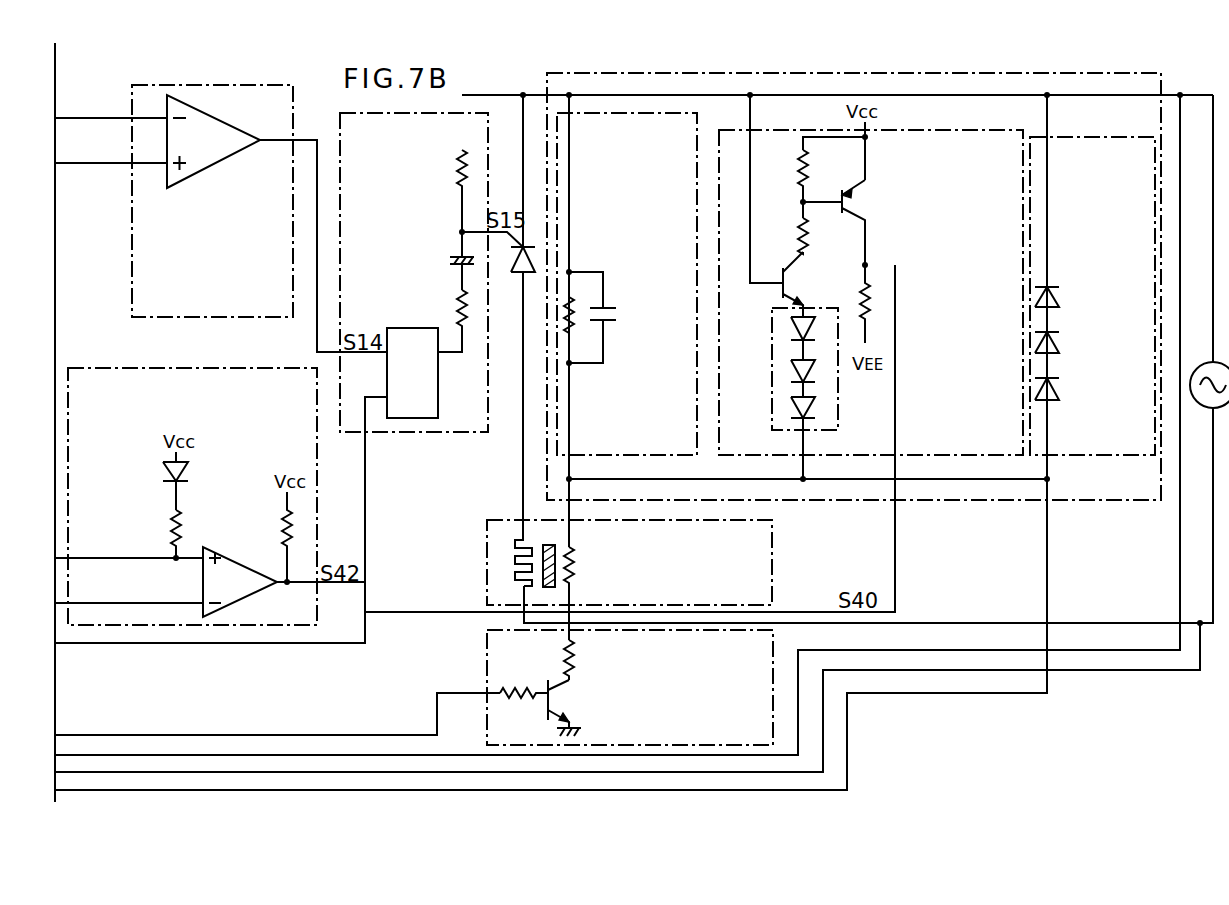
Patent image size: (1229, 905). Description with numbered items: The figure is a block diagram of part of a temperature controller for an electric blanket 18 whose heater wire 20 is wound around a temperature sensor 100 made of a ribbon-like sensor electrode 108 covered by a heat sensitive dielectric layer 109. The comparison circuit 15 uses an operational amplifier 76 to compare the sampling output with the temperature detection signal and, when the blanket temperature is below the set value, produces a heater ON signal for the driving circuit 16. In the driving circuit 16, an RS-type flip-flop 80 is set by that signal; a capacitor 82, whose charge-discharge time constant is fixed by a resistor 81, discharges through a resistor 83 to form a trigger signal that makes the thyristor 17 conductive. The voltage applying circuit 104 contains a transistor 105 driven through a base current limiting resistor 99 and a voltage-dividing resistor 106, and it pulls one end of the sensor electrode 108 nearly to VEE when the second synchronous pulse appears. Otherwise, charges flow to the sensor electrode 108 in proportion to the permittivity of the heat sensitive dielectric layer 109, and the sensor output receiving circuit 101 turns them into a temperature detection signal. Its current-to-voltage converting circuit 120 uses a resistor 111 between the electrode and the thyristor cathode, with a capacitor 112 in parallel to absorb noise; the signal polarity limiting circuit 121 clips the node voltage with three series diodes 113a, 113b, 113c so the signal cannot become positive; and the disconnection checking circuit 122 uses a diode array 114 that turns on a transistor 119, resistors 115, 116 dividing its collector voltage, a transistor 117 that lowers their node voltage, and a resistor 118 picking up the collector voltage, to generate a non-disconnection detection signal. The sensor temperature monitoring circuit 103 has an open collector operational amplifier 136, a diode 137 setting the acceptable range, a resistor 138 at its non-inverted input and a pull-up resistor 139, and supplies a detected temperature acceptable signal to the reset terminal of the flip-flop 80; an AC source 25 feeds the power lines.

The comparison circuit 15 is at (132, 100).
The operational amplifier 76 is at (240, 128).
The driving circuit 16 is at (340, 137).
The resistor 83 is at (459, 168).
The capacitor 82 is at (452, 257).
The resistor 81 is at (456, 312).
The RS-type flip-flop 80 is at (439, 376).
The thyristor 17 is at (524, 276).
The sensor temperature monitoring circuit 103 is at (135, 368).
The diode 137 is at (188, 470).
The resistor 138 is at (183, 524).
The resistor 139 is at (282, 522).
The open collector type operational amplifier 136 is at (243, 596).
The sensor output receiving circuit 101 is at (1090, 500).
The current-to-voltage converting circuit 120 is at (695, 113).
The resistor 111 is at (575, 320).
The capacitor 112 is at (608, 306).
The disconnection checking circuit 122 is at (937, 130).
The resistor 115 is at (799, 172).
The resistor 116 is at (798, 234).
The transistor 117 is at (857, 218).
The resistor 118 is at (862, 285).
The transistor 119 is at (800, 278).
The diode array 114 is at (770, 382).
The signal polarity limiting circuit 121 is at (1075, 137).
The diode 113a is at (1060, 292).
The diode 113b is at (1060, 337).
The diode 113c is at (1060, 383).
The AC power source 25 is at (1210, 350).
The electric blanket 18 is at (487, 550).
The heater wire 20 is at (512, 568).
The heat sensitive dielectric layer 109 is at (548, 555).
The sensor electrode 108 is at (575, 563).
The temperature sensor 100 is at (603, 550).
The voltage applying circuit 104 is at (487, 650).
The voltage-dividing resistor 106 is at (565, 655).
The base current limiting resistor 99 is at (537, 693).
The transistor 105 is at (556, 718).